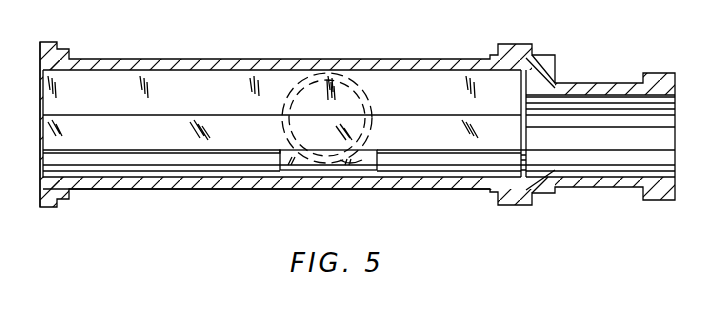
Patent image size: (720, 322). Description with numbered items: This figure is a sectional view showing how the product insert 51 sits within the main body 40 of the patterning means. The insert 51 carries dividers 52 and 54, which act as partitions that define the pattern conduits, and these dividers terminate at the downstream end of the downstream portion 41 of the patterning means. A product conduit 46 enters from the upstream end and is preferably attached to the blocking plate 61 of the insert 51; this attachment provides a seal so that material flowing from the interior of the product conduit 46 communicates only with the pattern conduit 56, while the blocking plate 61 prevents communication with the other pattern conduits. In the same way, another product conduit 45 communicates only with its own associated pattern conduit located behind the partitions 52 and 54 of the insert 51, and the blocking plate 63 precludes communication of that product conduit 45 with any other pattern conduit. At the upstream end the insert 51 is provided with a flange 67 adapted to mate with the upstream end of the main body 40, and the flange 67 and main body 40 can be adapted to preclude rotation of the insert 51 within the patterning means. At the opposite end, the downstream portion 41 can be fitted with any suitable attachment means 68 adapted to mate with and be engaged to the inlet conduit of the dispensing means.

The main body 40 is at (290, 190).
The downstream portion 41 is at (157, 62).
The product conduit 45 is at (288, 86).
The product conduit 46 is at (588, 188).
The product insert 51 is at (431, 108).
The divider 52 is at (205, 100).
The divider 54 is at (155, 141).
The pattern conduit 56 is at (517, 163).
The blocking plate 61 is at (520, 86).
The blocking plate 63 is at (286, 150).
The flange 67 is at (531, 56).
The attachment means 68 is at (44, 42).